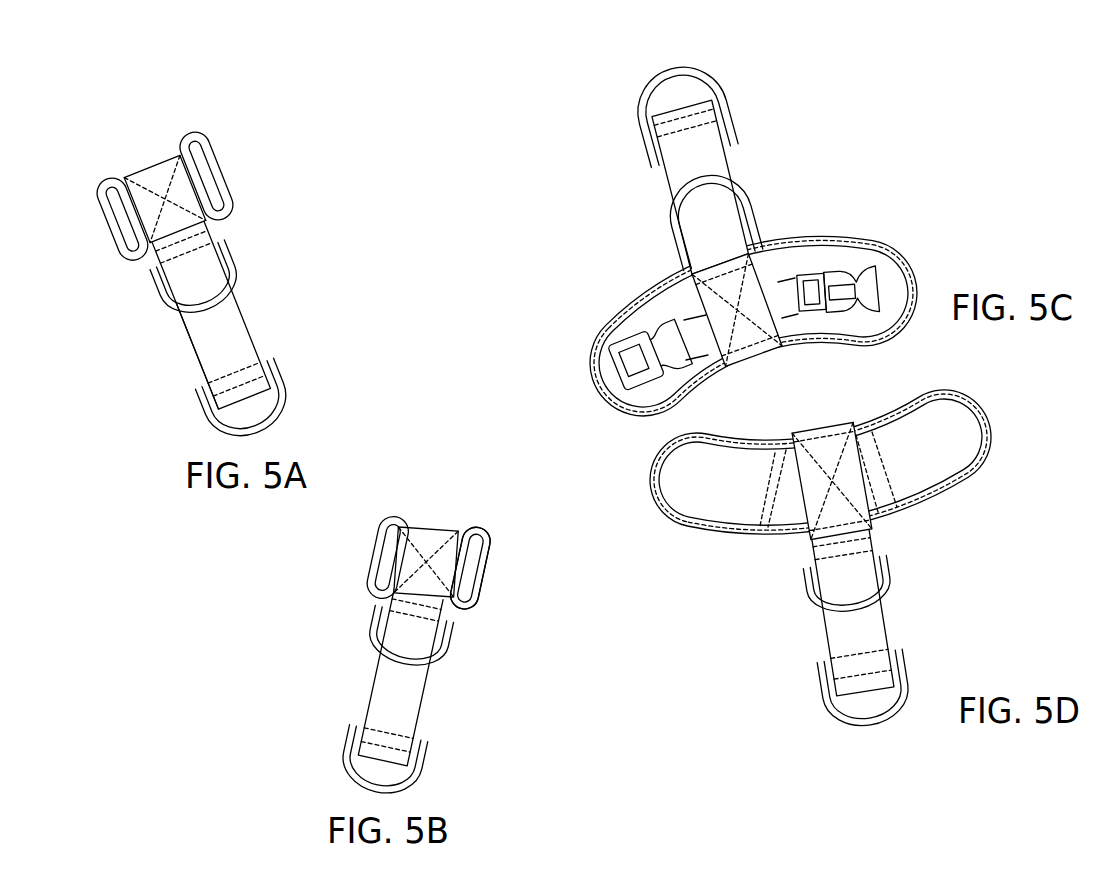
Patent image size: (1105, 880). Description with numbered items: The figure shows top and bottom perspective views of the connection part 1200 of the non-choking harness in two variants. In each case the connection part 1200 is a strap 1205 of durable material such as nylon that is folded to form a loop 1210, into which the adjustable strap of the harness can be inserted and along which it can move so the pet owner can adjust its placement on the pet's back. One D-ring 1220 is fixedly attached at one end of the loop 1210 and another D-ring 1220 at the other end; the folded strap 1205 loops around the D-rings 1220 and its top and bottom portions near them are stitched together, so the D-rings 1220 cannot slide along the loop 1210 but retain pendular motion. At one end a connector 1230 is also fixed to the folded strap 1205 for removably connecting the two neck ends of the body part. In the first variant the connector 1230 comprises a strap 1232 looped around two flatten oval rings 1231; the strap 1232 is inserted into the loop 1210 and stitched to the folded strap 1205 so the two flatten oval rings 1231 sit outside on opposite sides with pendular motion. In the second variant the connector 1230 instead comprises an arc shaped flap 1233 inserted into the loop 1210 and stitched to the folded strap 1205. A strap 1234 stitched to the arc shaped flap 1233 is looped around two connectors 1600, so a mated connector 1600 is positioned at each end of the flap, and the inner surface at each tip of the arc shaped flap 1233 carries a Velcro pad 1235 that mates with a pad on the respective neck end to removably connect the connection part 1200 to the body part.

In FIG. 5A, the connection part 1200 is at (280, 282).
In FIG. 5B, the connection part 1200 is at (345, 657).
In FIG. 5C, the connection part 1200 is at (810, 193).
In FIG. 5D, the connection part 1200 is at (765, 608).
In FIG. 5A, the strap 1205 is at (233, 327).
In FIG. 5B, the strap 1205 is at (400, 677).
In FIG. 5C, the strap 1205 is at (697, 227).
In FIG. 5D, the strap 1205 is at (863, 635).
In FIG. 5A, the loop 1210 is at (195, 355).
In FIG. 5A, the D-ring 1220 is at (167, 297).
In FIG. 5B, the D-ring 1220 is at (460, 642).
In FIG. 5C, the D-ring 1220 is at (698, 75).
In FIG. 5D, the D-ring 1220 is at (860, 727).
In FIG. 5A, the connector 1230 is at (215, 162).
In FIG. 5B, the connector 1230 is at (490, 567).
In FIG. 5C, the connector 1230 is at (913, 277).
In FIG. 5D, the connector 1230 is at (988, 415).
In FIG. 5A, the flatten oval ring 1231 is at (113, 227).
In FIG. 5B, the flatten oval ring 1231 is at (380, 543).
In FIG. 5A, the strap 1232 is at (128, 198).
In FIG. 5B, the strap 1232 is at (400, 533).
In FIG. 5C, the strap 1232 is at (737, 310).
In FIG. 5D, the strap 1232 is at (832, 480).
In FIG. 5C, the arc shaped flap 1233 is at (845, 322).
In FIG. 5D, the arc shaped flap 1233 is at (788, 514).
In FIG. 5C, the strap 1234 is at (700, 327).
In FIG. 5D, the Velcro pad 1235 is at (937, 467).
In FIG. 5C, the connector 1600 is at (640, 353).